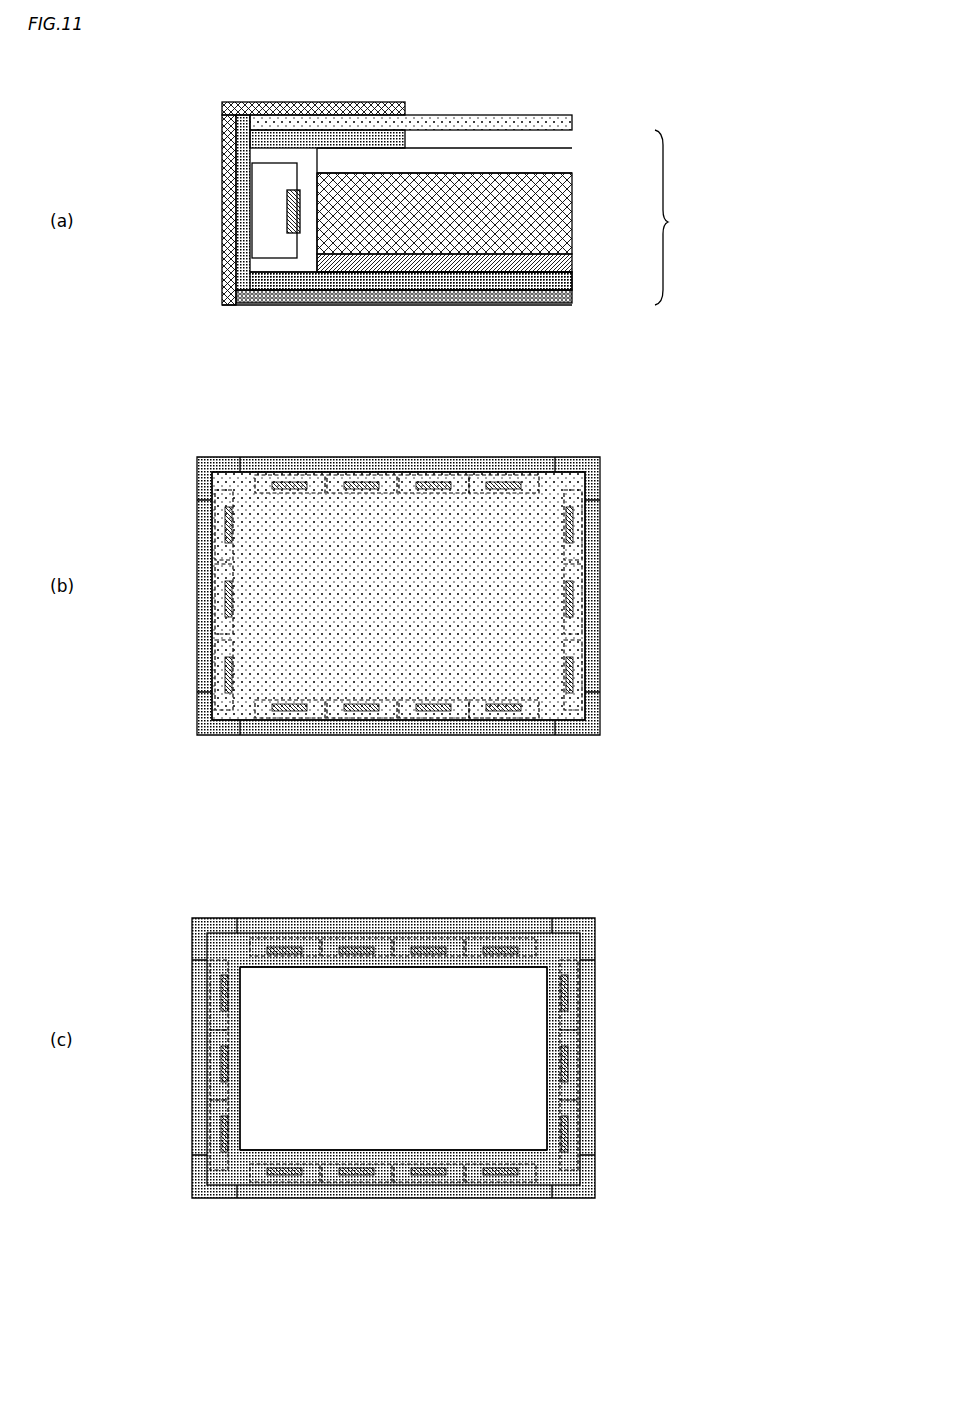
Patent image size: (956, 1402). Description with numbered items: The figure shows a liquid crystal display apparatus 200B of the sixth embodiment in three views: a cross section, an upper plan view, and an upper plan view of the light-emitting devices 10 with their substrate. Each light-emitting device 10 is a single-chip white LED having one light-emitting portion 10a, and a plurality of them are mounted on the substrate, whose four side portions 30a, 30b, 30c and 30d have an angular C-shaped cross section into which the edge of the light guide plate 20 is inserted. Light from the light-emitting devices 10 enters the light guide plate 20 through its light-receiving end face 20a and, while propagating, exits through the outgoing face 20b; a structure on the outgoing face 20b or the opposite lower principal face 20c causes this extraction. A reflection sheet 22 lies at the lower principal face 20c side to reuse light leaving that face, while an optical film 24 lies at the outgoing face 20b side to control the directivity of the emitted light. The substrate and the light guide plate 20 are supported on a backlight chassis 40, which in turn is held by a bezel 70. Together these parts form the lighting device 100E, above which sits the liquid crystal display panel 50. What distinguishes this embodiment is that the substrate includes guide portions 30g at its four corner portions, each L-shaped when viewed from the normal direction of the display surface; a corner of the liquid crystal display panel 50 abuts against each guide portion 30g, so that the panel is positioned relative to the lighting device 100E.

The light-emitting device 10 is at (270, 237).
The light-emitting portion 10a is at (287, 210).
The light guide plate 20 is at (552, 220).
The light-receiving end face 20a is at (323, 300).
The outgoing face 20b is at (440, 172).
The lower principal face 20c is at (436, 305).
The reflection sheet 22 is at (555, 265).
The optical film 24 is at (556, 153).
The side portion 30a is at (192, 1040).
The side portion 30b is at (436, 1200).
The side portion 30c is at (595, 1042).
The side portion 30d is at (382, 918).
The guide portion 30g is at (241, 100).
The backlight chassis 40 is at (366, 305).
The liquid crystal display panel 50 is at (488, 125).
The bezel 70 is at (276, 100).
The lighting device 100E is at (688, 217).
The liquid crystal display apparatus 200B is at (590, 98).